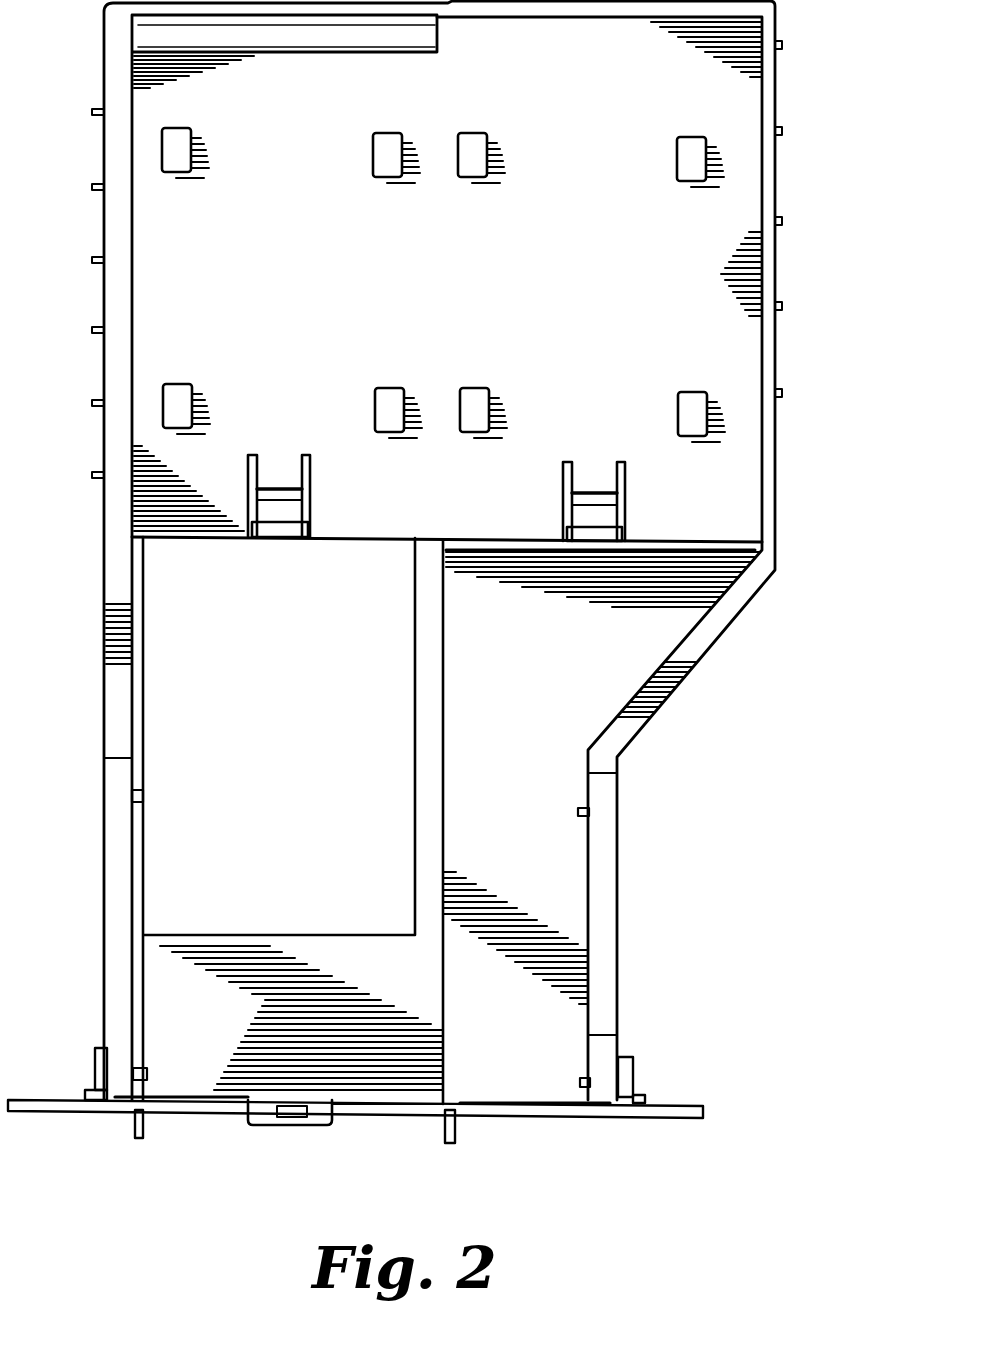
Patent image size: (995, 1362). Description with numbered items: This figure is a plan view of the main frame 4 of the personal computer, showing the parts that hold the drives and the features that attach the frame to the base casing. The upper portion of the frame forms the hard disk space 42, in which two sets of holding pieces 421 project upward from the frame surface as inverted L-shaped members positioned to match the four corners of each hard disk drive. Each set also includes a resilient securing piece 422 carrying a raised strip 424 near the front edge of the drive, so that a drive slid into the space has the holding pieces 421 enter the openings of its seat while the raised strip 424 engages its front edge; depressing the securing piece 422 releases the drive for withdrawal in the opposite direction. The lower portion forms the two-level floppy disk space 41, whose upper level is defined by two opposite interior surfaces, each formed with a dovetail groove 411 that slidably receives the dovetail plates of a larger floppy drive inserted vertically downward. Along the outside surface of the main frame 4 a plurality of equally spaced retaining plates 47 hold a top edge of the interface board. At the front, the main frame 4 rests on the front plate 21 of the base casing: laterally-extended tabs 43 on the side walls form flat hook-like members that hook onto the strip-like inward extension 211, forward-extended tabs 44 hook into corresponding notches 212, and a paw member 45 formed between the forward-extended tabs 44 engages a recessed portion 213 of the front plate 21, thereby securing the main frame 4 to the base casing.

The main frame 4 is at (668, 756).
The floppy disk space 41 is at (590, 962).
The dovetail groove 411 is at (141, 807).
The hard disk space 42 is at (745, 276).
The holding piece 421 is at (181, 165).
The resilient securing piece 422 is at (286, 508).
The raised strip 424 is at (282, 488).
The laterally-extended tab 43 is at (85, 1097).
The forward-extended tab 44 is at (140, 1140).
The paw member 45 is at (287, 1125).
The retaining plate 47 is at (98, 262).
The front plate 21 is at (606, 1120).
The strip-like inward extension 211 is at (630, 1062).
The notch 212 is at (128, 1112).
The recessed portion 213 is at (340, 1112).